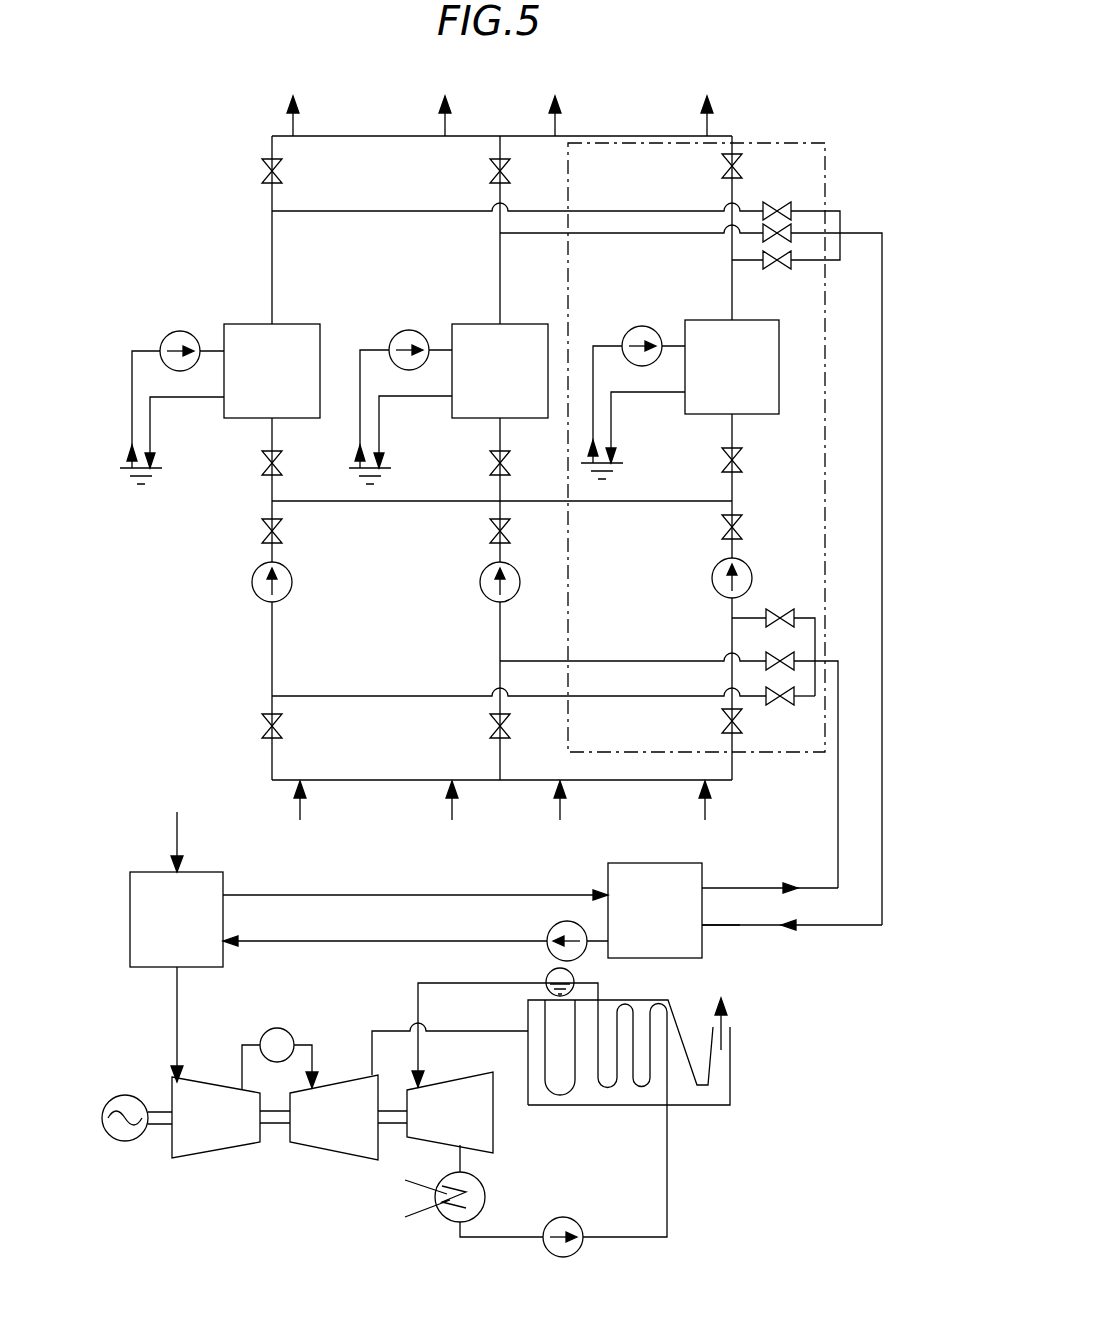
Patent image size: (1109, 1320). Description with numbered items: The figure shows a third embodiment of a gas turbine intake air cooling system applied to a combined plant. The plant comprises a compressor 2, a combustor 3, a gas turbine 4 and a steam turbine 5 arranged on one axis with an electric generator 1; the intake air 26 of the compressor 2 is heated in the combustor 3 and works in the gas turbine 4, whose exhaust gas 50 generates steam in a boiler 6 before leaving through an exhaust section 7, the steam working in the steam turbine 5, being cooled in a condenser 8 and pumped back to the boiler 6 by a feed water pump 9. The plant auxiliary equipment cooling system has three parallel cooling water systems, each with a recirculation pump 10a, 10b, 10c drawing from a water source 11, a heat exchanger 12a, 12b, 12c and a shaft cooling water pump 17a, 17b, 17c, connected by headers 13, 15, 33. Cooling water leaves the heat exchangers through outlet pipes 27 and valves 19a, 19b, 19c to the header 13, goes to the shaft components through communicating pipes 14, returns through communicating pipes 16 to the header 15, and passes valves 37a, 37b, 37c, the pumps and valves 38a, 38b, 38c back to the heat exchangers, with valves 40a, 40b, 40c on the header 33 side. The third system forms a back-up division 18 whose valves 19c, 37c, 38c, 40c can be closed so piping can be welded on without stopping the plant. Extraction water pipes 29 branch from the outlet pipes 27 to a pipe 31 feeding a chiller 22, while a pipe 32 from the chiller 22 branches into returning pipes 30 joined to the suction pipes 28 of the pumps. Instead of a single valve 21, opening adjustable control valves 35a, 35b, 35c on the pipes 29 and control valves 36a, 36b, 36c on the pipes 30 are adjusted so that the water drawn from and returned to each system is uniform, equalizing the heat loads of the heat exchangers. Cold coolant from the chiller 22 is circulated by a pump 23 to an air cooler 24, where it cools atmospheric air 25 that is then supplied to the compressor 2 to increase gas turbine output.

The electric generator 1 is at (108, 1099).
The compressor 2 is at (208, 1076).
The combustor 3 is at (273, 1028).
The gas turbine 4 is at (346, 1072).
The steam turbine 5 is at (493, 1135).
The boiler 6 is at (668, 1003).
The exhaust section 7 is at (730, 1068).
The condenser 8 is at (486, 1193).
The feed water pump 9 is at (573, 1218).
The recirculation pump 10a is at (166, 340).
The recirculation pump 10b is at (396, 338).
The recirculation pump 10c is at (635, 328).
The water source 11 is at (158, 478).
The heat exchanger 12a is at (236, 420).
The heat exchanger 12b is at (464, 418).
The heat exchanger 12c is at (696, 414).
The header 13 is at (488, 136).
The communicating pipe 14 is at (291, 120).
The header 15 is at (431, 782).
The communicating pipe 16 is at (300, 808).
The shaft cooling water pump 17a is at (292, 582).
The shaft cooling water pump 17b is at (478, 588).
The shaft cooling water pump 17c is at (712, 584).
The back-up division 18 is at (756, 143).
The valve 19a is at (280, 168).
The valve 19b is at (508, 168).
The valve 19c is at (724, 162).
The valve 21 is at (739, 947).
The chiller 22 is at (664, 863).
The pump 23 is at (552, 932).
The air cooler 24 is at (201, 872).
The atmospheric air 25 is at (176, 834).
The intake air 26 is at (177, 1003).
The heat exchanger outlet pipe 27 is at (272, 294).
The suction pipe 28 is at (272, 636).
The extraction water pipe 29 is at (411, 210).
The returning pipe 30 is at (744, 612).
The pipe 31 is at (882, 490).
The pipe 32 is at (838, 838).
The header 33 is at (472, 501).
The opening adjustable control valve 35a is at (780, 206).
The opening adjustable control valve 35b is at (760, 231).
The opening adjustable control valve 35c is at (775, 270).
The opening adjustable control valve 36a is at (776, 706).
The opening adjustable control valve 36b is at (765, 660).
The opening adjustable control valve 36c is at (780, 610).
The valve 37a is at (280, 723).
The valve 37b is at (508, 722).
The valve 37c is at (728, 718).
The valve 38a is at (280, 528).
The valve 38b is at (492, 538).
The valve 38c is at (740, 524).
The valve 40a is at (275, 460).
The valve 40b is at (503, 460).
The valve 40c is at (740, 456).
The exhaust gas 50 is at (457, 1031).